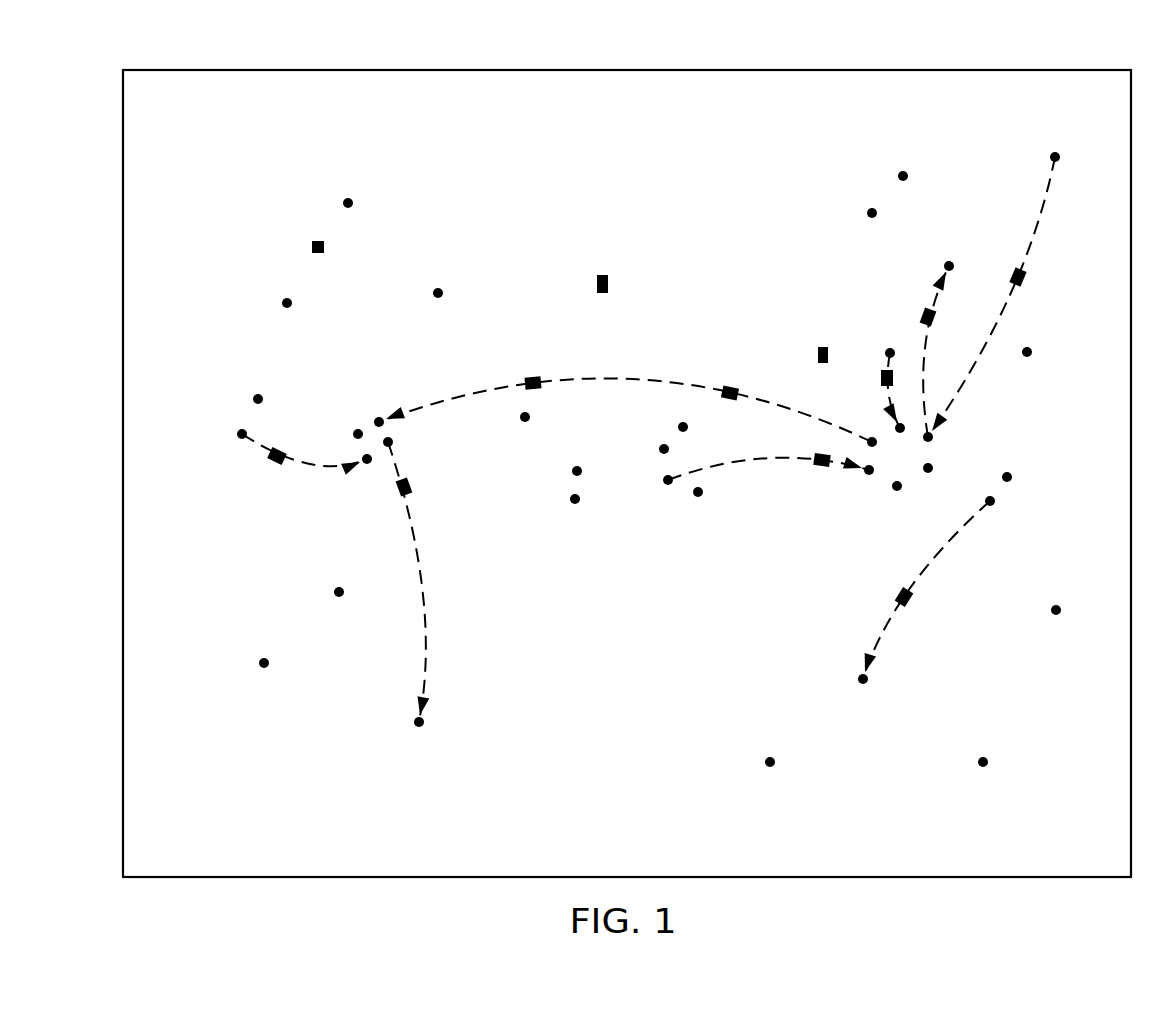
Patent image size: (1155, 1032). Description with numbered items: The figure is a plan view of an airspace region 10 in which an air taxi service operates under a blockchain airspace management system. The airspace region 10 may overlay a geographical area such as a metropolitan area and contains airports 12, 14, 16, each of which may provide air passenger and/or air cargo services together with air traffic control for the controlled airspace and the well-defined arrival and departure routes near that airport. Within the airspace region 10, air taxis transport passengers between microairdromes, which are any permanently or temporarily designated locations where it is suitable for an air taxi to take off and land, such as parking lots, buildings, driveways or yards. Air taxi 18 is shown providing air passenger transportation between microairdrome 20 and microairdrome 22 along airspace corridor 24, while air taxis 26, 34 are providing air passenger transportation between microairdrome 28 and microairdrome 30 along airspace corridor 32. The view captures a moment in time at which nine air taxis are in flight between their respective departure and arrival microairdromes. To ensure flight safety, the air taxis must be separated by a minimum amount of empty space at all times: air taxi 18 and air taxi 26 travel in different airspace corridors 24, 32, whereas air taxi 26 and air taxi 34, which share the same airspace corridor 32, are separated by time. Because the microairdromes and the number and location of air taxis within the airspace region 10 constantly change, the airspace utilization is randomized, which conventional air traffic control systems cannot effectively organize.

The airspace region 10 is at (810, 70).
The airport 12 is at (603, 275).
The airport 14 is at (823, 347).
The airport 16 is at (312, 250).
The air taxi 18 is at (822, 466).
The microairdrome 20 is at (668, 484).
The microairdrome 22 is at (869, 474).
The airspace corridor 24 is at (729, 463).
The air taxi 26 is at (533, 378).
The microairdrome 28 is at (872, 438).
The microairdrome 30 is at (379, 418).
The airspace corridor 32 is at (648, 382).
The air taxi 34 is at (732, 388).